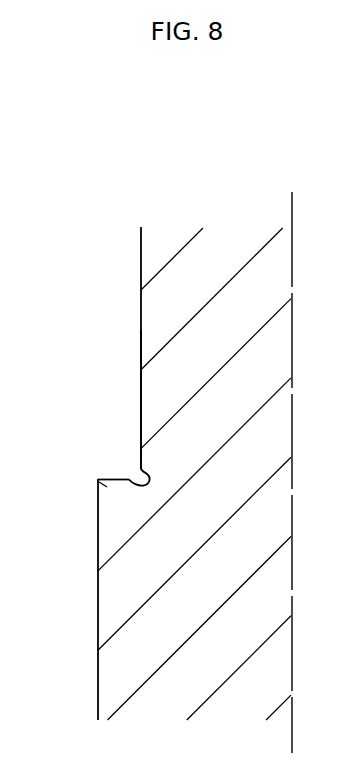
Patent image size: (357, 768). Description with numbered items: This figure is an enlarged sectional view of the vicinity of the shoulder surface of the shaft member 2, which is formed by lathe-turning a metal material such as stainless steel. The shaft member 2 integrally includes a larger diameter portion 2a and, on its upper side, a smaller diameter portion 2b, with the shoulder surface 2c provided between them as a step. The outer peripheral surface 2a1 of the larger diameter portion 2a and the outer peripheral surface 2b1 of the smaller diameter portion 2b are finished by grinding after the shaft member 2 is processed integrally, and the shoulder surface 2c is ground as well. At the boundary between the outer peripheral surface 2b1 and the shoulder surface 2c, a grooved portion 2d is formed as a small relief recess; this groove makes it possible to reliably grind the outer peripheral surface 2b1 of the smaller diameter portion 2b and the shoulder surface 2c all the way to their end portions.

The shaft member 2 is at (128, 261).
The larger diameter portion 2a is at (115, 673).
The outer peripheral surface of the larger diameter portion 2a1 is at (98, 585).
The smaller diameter portion 2b is at (160, 304).
The outer peripheral surface of the smaller diameter portion 2b1 is at (141, 353).
The shoulder surface 2c is at (115, 476).
The grooved portion 2d is at (142, 478).